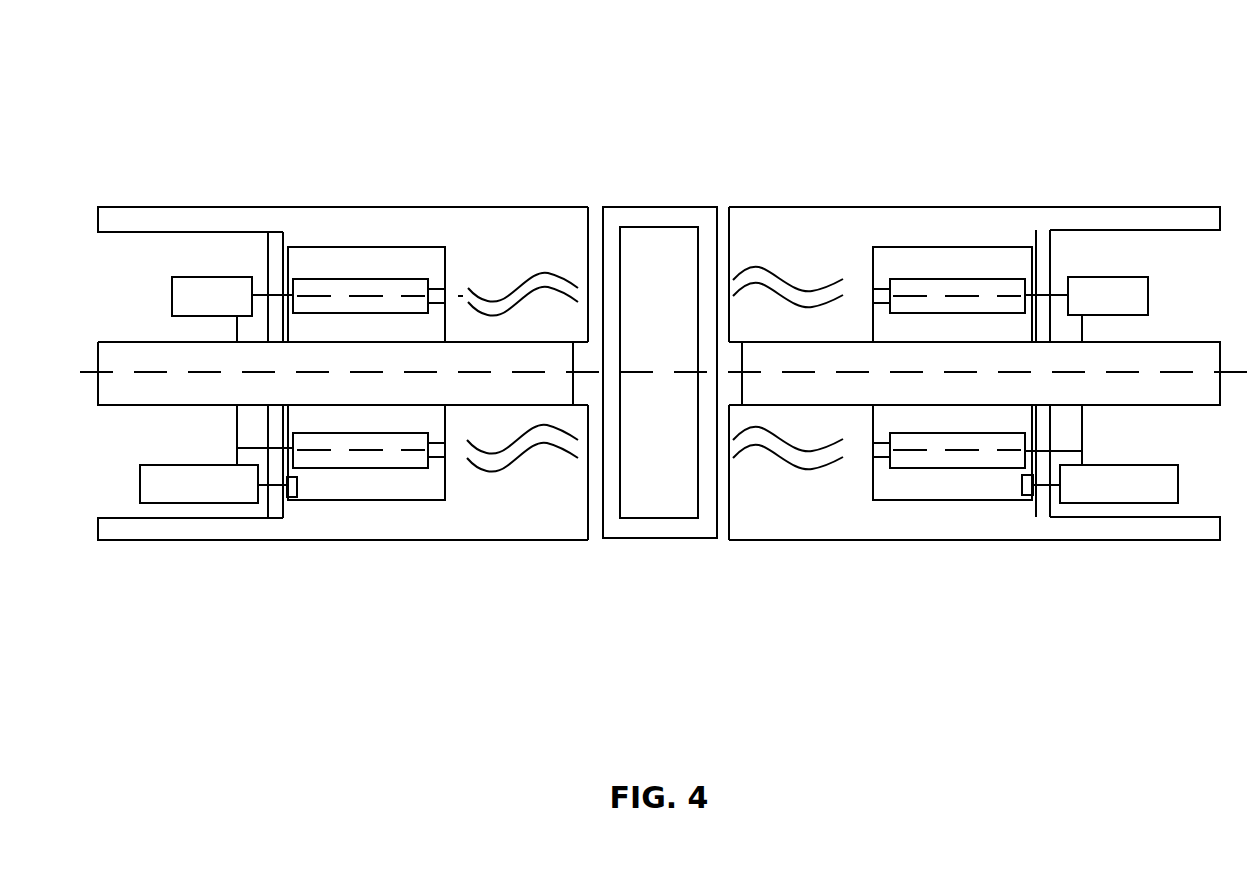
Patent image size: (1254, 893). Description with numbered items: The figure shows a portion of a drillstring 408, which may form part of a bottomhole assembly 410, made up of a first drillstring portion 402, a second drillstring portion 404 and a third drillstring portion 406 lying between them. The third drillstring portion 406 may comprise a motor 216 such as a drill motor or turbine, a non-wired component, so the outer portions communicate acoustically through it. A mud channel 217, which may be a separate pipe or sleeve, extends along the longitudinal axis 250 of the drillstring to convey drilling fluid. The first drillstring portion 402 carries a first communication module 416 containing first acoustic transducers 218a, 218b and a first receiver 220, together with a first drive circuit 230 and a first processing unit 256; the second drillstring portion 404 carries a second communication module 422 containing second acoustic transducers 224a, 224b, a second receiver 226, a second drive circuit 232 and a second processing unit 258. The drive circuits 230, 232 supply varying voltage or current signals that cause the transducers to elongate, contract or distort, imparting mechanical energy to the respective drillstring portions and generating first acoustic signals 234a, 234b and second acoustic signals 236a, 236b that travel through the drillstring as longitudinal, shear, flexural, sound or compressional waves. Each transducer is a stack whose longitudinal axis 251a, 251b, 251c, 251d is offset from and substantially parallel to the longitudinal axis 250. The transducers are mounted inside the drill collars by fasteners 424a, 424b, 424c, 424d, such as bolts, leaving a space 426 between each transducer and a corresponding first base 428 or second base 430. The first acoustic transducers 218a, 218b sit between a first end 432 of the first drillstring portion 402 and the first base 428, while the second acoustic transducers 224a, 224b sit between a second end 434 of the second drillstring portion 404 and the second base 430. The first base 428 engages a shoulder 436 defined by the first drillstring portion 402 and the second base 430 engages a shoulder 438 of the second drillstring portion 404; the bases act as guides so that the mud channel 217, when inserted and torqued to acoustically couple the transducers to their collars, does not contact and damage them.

The motor 216 is at (658, 227).
The mud channel 217 is at (148, 346).
The first acoustic transducer 218a is at (355, 280).
The first acoustic transducer 218b is at (420, 470).
The first receiver 220 is at (290, 500).
The second acoustic transducer 224a is at (933, 278).
The second acoustic transducer 224b is at (900, 470).
The second receiver 226 is at (1027, 500).
The first drive circuit 230 is at (172, 292).
The second drive circuit 232 is at (1150, 286).
The first acoustic signal 234a is at (522, 310).
The first acoustic signal 234b is at (510, 472).
The second acoustic signal 236a is at (757, 266).
The second acoustic signal 236b is at (735, 456).
The longitudinal axis 250 is at (98, 372).
The longitudinal axis 251a is at (368, 297).
The longitudinal axis 251b is at (357, 447).
The longitudinal axis 251c is at (953, 297).
The longitudinal axis 251d is at (955, 450).
The first processing unit 256 is at (140, 483).
The second processing unit 258 is at (1178, 482).
The first drillstring portion 402 is at (387, 527).
The second drillstring portion 404 is at (855, 527).
The third drillstring portion 406 is at (655, 528).
The drillstring 408 is at (326, 62).
The bottomhole assembly 410 is at (505, 55).
The first communication module 416 is at (358, 220).
The second communication module 422 is at (945, 220).
The fastener 424a is at (447, 285).
The fastener 424b is at (447, 437).
The fastener 424c is at (882, 300).
The fastener 424d is at (882, 443).
The space 426 is at (288, 282).
The first base 428 is at (277, 517).
The second base 430 is at (1042, 517).
The first end 432 is at (498, 530).
The second end 434 is at (765, 530).
The shoulder 436 is at (283, 232).
The shoulder 438 is at (1036, 230).